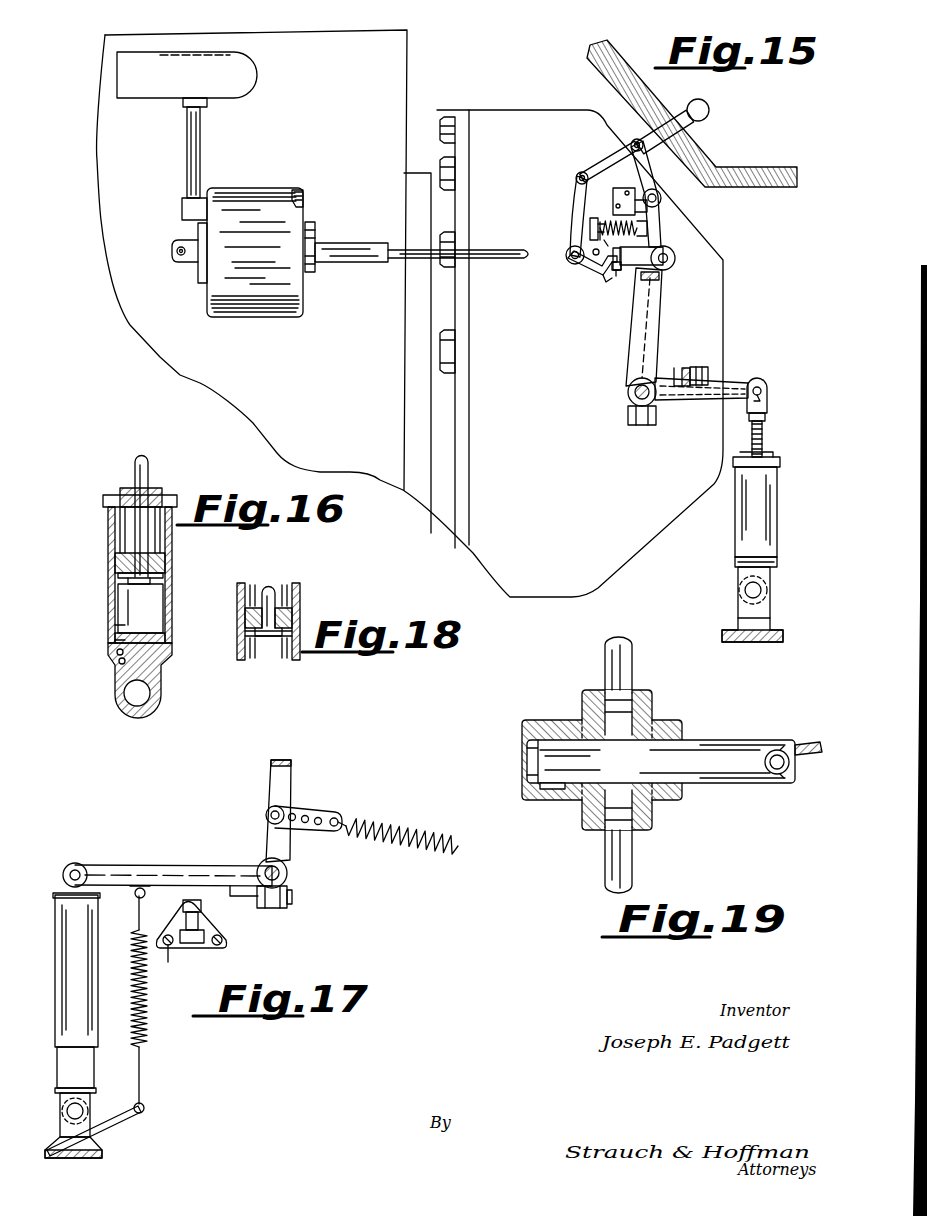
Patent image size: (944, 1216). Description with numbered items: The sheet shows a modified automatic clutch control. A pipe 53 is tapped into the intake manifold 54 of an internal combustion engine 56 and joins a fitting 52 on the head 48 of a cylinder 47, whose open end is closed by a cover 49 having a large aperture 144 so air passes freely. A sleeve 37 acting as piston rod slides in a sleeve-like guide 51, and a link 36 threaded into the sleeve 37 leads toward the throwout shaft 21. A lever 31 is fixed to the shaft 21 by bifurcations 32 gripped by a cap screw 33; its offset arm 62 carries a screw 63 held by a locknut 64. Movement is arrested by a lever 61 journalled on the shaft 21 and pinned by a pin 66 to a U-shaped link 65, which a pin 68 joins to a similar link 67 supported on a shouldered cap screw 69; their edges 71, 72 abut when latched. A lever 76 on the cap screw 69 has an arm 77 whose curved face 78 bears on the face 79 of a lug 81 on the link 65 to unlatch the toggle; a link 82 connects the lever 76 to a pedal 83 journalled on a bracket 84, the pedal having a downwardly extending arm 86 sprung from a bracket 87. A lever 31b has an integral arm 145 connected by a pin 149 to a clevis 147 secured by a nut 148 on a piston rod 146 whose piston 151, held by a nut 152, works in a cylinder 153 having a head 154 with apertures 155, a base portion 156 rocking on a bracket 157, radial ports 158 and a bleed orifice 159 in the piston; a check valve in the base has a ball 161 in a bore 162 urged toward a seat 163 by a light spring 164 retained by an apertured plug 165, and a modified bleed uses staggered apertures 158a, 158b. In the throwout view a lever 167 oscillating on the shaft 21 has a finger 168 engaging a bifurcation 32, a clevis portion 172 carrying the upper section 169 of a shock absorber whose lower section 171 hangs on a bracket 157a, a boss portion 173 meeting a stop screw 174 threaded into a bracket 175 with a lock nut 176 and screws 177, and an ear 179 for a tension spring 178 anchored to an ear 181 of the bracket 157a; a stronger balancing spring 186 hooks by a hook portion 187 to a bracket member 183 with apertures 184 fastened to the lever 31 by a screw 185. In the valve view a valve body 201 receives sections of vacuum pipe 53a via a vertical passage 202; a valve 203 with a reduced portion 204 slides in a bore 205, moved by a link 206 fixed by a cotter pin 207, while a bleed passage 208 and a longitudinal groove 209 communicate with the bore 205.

In FIG. 15, the intake manifold 54 is at (230, 88).
In FIG. 15, the internal combustion engine 56 is at (370, 84).
In FIG. 15, the pipe 53 is at (187, 150).
In FIG. 15, the fitting 52 is at (182, 209).
In FIG. 15, the cylinder 47 is at (262, 200).
In FIG. 15, the cover 49 is at (302, 195).
In FIG. 15, the aperture 144 is at (303, 208).
In FIG. 15, the sleeve member 37 is at (342, 251).
In FIG. 15, the link 36 is at (478, 255).
In FIG. 15, the sleeve-like guide 51 is at (311, 270).
In FIG. 15, the head 48 is at (205, 298).
In FIG. 15, the link 82 is at (612, 159).
In FIG. 15, the pedal 83 is at (684, 124).
In FIG. 15, the bracket 84 is at (625, 196).
In FIG. 15, the arm 86 is at (660, 210).
In FIG. 15, the edge 72 is at (650, 237).
In FIG. 15, the bracket 87 is at (590, 229).
In FIG. 15, the edge 71 is at (612, 240).
In FIG. 15, the lever 76 is at (577, 205).
In FIG. 15, the cap screw 69 is at (568, 260).
In FIG. 15, the link 67 is at (594, 252).
In FIG. 15, the arm 77 is at (590, 272).
In FIG. 15, the curved face 78 is at (604, 278).
In FIG. 15, the face 79 is at (616, 264).
In FIG. 15, the lug 81 is at (617, 268).
In FIG. 15, the pin 68 is at (641, 256).
In FIG. 15, the pin 66 is at (676, 256).
In FIG. 15, the link 65 is at (672, 266).
In FIG. 15, the lever 61 is at (663, 291).
In FIG. 15, the lever 31b is at (650, 334).
In FIG. 15, the shaft 21 is at (628, 392).
In FIG. 17, the shaft 21 is at (288, 873).
In FIG. 15, the offset arm 62 is at (686, 368).
In FIG. 15, the screw 63 is at (702, 367).
In FIG. 15, the locknut 64 is at (681, 386).
In FIG. 15, the arm 145 is at (726, 384).
In FIG. 15, the clevis 147 is at (768, 395).
In FIG. 15, the pin 149 is at (760, 386).
In FIG. 15, the nut 148 is at (766, 414).
In FIG. 15, the piston rod 146 is at (763, 436).
In FIG. 16, the piston rod 146 is at (141, 470).
In FIG. 18, the piston rod 146 is at (268, 588).
In FIG. 15, the head 154 is at (770, 463).
In FIG. 16, the head 154 is at (168, 495).
In FIG. 15, the cylinder 153 is at (770, 507).
In FIG. 16, the cylinder 153 is at (108, 531).
In FIG. 18, the cylinder 153 is at (298, 586).
In FIG. 15, the base portion 156 is at (778, 562).
In FIG. 16, the base portion 156 is at (170, 662).
In FIG. 15, the bracket 157 is at (740, 604).
In FIG. 16, the apertures 155 is at (122, 494).
In FIG. 16, the piston 151 is at (168, 563).
In FIG. 18, the piston 151 is at (295, 606).
In FIG. 16, the radial ports 158 is at (118, 575).
In FIG. 16, the bleed orifice 159 is at (126, 582).
In FIG. 18, the bleed orifice 159 is at (246, 630).
In FIG. 16, the nut 152 is at (163, 590).
In FIG. 16, the bore 162 is at (120, 668).
In FIG. 16, the apertured plug 165 is at (118, 626).
In FIG. 16, the spring 164 is at (115, 640).
In FIG. 16, the ball 161 is at (118, 652).
In FIG. 16, the seat 163 is at (119, 661).
In FIG. 18, the aperture 158a is at (245, 616).
In FIG. 18, the aperture 158b is at (296, 629).
In FIG. 17, the lever 31 is at (283, 790).
In FIG. 17, the bifurcations 32 is at (286, 905).
In FIG. 17, the cap screw 33 is at (292, 896).
In FIG. 17, the apertures 184 is at (300, 813).
In FIG. 17, the screw 185 is at (266, 815).
In FIG. 17, the bracket member 183 is at (292, 830).
In FIG. 17, the hook portion 187 is at (340, 821).
In FIG. 17, the tension spring 186 is at (398, 825).
In FIG. 17, the lever 167 is at (215, 875).
In FIG. 17, the clevis portion 172 is at (75, 863).
In FIG. 17, the boss portion 173 is at (144, 895).
In FIG. 17, the offset lug 168 is at (255, 900).
In FIG. 17, the upper section 169 is at (76, 921).
In FIG. 17, the lower section 171 is at (80, 1073).
In FIG. 17, the screws 177 is at (133, 940).
In FIG. 17, the lock nut 176 is at (205, 913).
In FIG. 17, the screw 174 is at (191, 945).
In FIG. 17, the bracket 175 is at (168, 962).
In FIG. 17, the ear 179 is at (138, 888).
In FIG. 17, the tension spring 178 is at (148, 1039).
In FIG. 17, the ear 181 is at (145, 1110).
In FIG. 17, the bracket 157a is at (104, 1152).
In FIG. 19, the bleed passage 208 is at (580, 728).
In FIG. 19, the vacuum pipe 53a is at (612, 655).
In FIG. 19, the vertical passage 202 is at (634, 728).
In FIG. 19, the valve body 201 is at (662, 732).
In FIG. 19, the reduced portion 204 is at (661, 761).
In FIG. 19, the bore 205 is at (528, 758).
In FIG. 19, the valve 203 is at (697, 785).
In FIG. 19, the cotter pin 207 is at (776, 776).
In FIG. 19, the link 206 is at (806, 744).
In FIG. 19, the longitudinal groove 209 is at (556, 790).